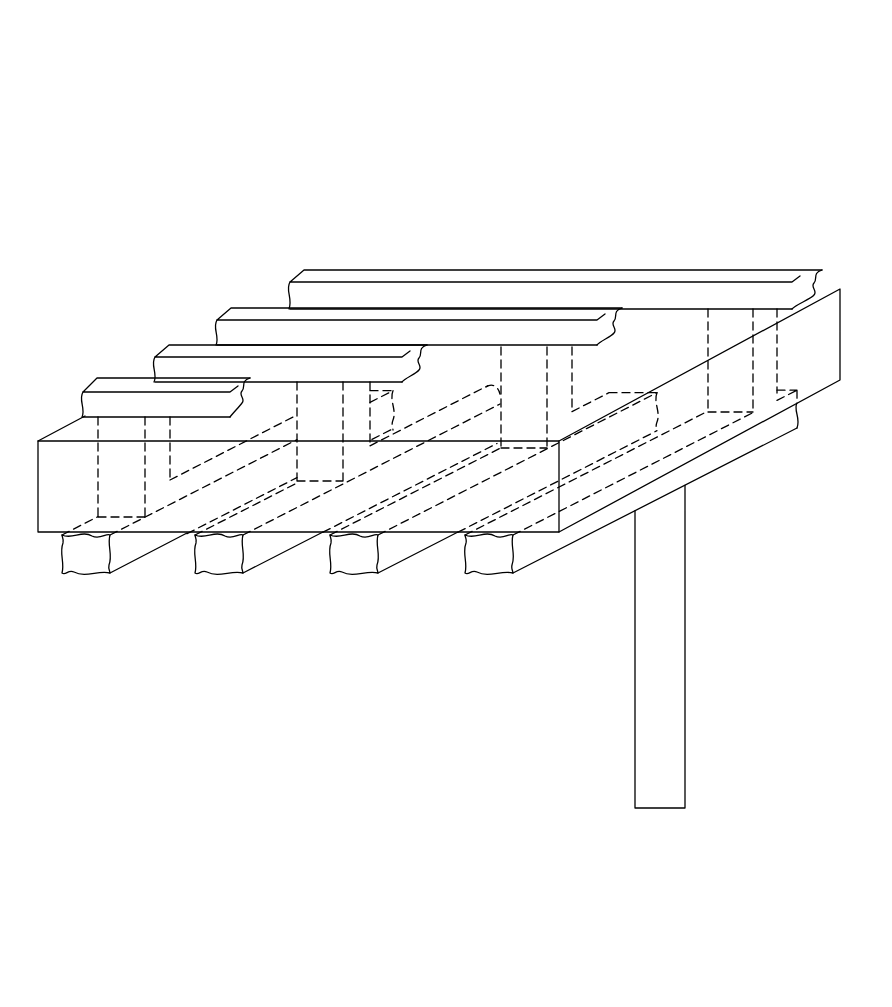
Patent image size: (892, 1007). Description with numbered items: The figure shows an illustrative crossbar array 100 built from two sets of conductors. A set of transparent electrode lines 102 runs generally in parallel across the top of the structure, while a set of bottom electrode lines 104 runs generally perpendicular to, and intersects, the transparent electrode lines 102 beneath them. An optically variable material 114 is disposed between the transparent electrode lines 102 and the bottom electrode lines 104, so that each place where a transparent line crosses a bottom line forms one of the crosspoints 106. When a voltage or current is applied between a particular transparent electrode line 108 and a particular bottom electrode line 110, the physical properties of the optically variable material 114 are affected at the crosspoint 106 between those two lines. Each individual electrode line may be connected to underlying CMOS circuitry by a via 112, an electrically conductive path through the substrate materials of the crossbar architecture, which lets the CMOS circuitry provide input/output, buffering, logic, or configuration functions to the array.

The crossbar array 100 is at (322, 108).
The transparent electrode lines 102 is at (449, 316).
The bottom electrode lines 104 is at (425, 514).
The crosspoints 106 is at (737, 330).
The particular transparent electrode line 108 is at (445, 278).
The particular bottom electrode line 110 is at (748, 452).
The via 112 is at (685, 700).
The optically variable material 114 is at (559, 533).